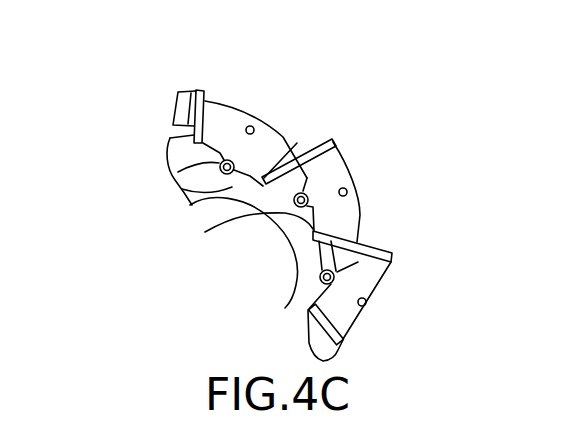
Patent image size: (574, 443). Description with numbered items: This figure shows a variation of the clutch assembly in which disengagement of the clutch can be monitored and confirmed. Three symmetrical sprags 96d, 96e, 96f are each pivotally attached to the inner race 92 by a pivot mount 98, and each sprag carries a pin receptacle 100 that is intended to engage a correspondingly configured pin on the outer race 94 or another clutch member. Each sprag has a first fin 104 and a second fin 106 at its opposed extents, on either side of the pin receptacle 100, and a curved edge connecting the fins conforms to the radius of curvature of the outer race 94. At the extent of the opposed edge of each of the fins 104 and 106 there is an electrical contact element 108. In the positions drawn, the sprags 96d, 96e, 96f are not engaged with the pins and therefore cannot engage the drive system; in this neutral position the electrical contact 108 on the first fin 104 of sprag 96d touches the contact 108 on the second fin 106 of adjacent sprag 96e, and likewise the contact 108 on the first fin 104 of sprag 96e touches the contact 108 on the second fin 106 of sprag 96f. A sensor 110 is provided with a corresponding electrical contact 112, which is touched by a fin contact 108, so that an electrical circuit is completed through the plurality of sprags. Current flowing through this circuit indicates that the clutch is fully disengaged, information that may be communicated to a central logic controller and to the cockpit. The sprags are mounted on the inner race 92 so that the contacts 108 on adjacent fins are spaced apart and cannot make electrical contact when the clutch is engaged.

The inner race 92 is at (182, 189).
The outer race 94 is at (331, 351).
The sprag 96d is at (376, 277).
The sprag 96e is at (330, 170).
The sprag 96f is at (203, 123).
The pivot mount 98 is at (319, 277).
The pin receptacle 100 is at (366, 303).
The first fin 104 is at (300, 253).
The second fin 106 is at (237, 231).
The electrical contact element 108 is at (232, 137).
The sensor 110 is at (179, 100).
The electrical contact 112 is at (199, 91).